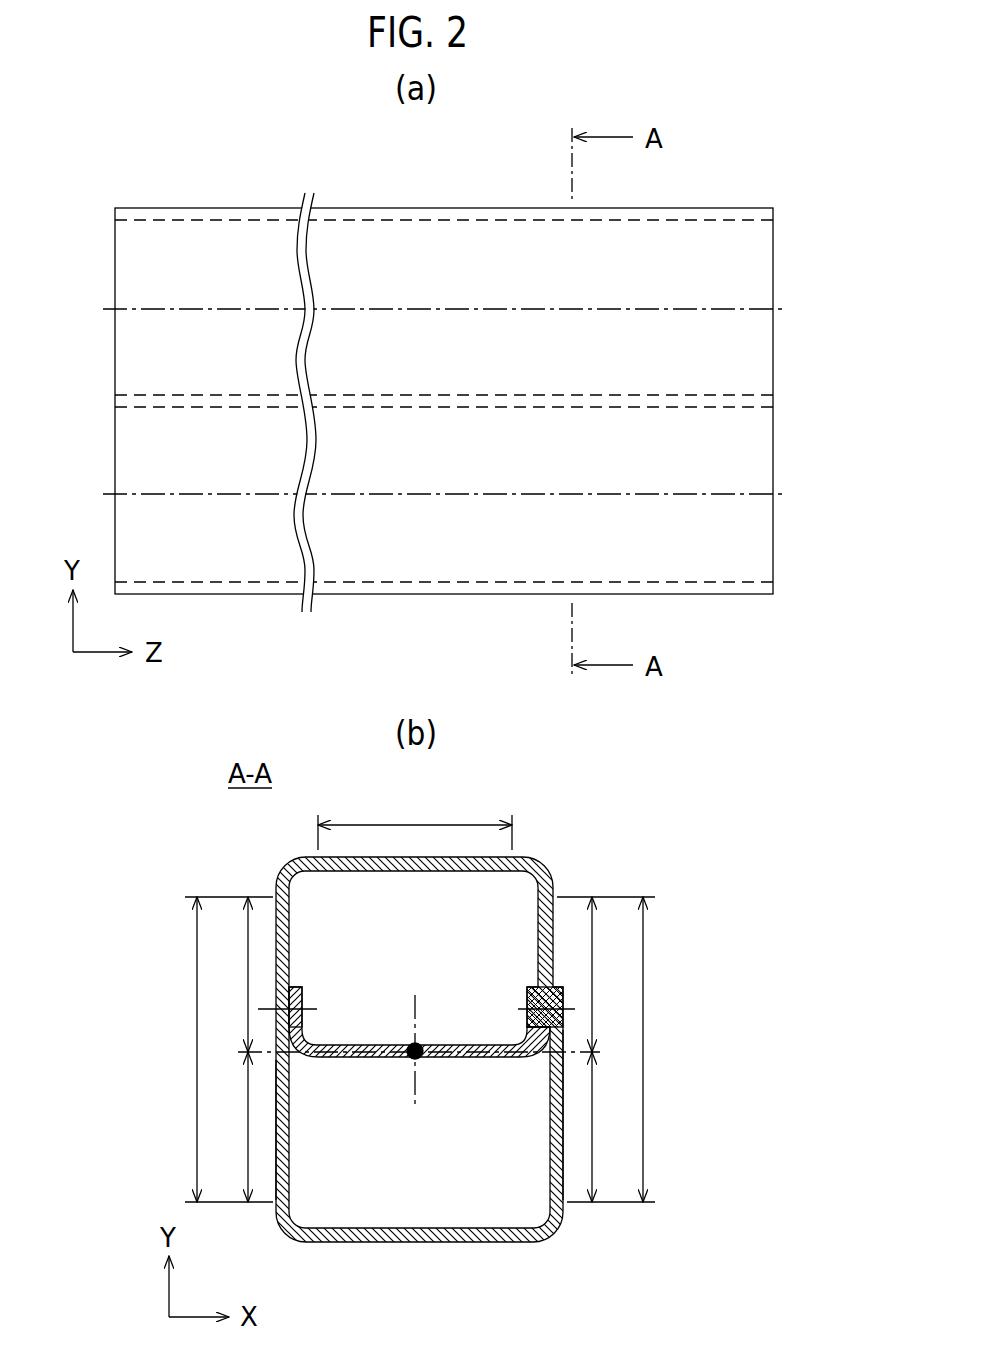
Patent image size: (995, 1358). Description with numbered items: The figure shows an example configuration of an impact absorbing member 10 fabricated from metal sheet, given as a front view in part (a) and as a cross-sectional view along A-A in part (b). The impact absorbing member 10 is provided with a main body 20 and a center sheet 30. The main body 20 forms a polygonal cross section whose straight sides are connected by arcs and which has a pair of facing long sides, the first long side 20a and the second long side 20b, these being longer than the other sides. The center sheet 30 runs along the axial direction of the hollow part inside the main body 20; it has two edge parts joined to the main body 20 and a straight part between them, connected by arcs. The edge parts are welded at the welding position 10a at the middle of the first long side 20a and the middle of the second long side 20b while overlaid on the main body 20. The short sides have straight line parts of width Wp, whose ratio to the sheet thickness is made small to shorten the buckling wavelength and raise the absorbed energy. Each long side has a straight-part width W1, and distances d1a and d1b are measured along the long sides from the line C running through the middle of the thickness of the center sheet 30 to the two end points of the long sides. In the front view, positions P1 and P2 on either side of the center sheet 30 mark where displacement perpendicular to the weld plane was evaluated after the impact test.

The impact absorbing member 10 is at (178, 193).
The main body 20 is at (444, 717).
The center sheet 30 is at (728, 395).
The welding position 10a is at (316, 1006).
The first long side 20a is at (549, 1072).
The second long side 20b is at (291, 1075).
The position P1 is at (728, 308).
The position P2 is at (728, 494).
The middle of thickness of the center sheet C is at (412, 1058).
The width of the straight line parts of the short sides Wp is at (415, 818).
The width of the long sides W1 is at (418, 1049).
The distance d1a is at (420, 974).
The distance d1b is at (420, 1127).